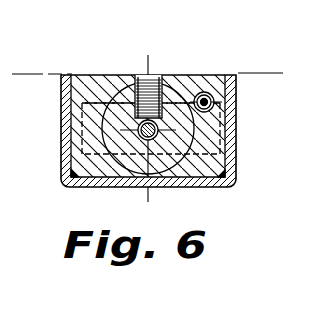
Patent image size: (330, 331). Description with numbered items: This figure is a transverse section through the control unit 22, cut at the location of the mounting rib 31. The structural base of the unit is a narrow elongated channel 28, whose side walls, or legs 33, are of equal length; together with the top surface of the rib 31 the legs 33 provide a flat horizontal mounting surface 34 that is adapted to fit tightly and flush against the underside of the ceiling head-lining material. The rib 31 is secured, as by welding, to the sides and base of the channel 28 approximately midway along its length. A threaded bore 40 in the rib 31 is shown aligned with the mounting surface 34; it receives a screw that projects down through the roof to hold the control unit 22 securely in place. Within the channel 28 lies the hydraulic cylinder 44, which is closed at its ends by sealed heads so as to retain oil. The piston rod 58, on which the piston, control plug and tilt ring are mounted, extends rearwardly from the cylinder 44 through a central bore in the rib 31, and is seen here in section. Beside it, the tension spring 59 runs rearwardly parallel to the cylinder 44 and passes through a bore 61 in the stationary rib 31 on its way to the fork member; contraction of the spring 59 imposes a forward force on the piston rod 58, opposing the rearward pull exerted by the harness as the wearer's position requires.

The control unit 22 is at (211, 190).
The channel 28 is at (103, 186).
The mounting rib 31 is at (98, 90).
The legs 33 is at (65, 118).
The mounting surface 34 is at (188, 75).
The threaded bore 40 is at (157, 84).
The hydraulic cylinder 44 is at (236, 153).
The piston rod 58 is at (152, 140).
The tension spring 59 is at (225, 98).
The bore 61 is at (212, 90).